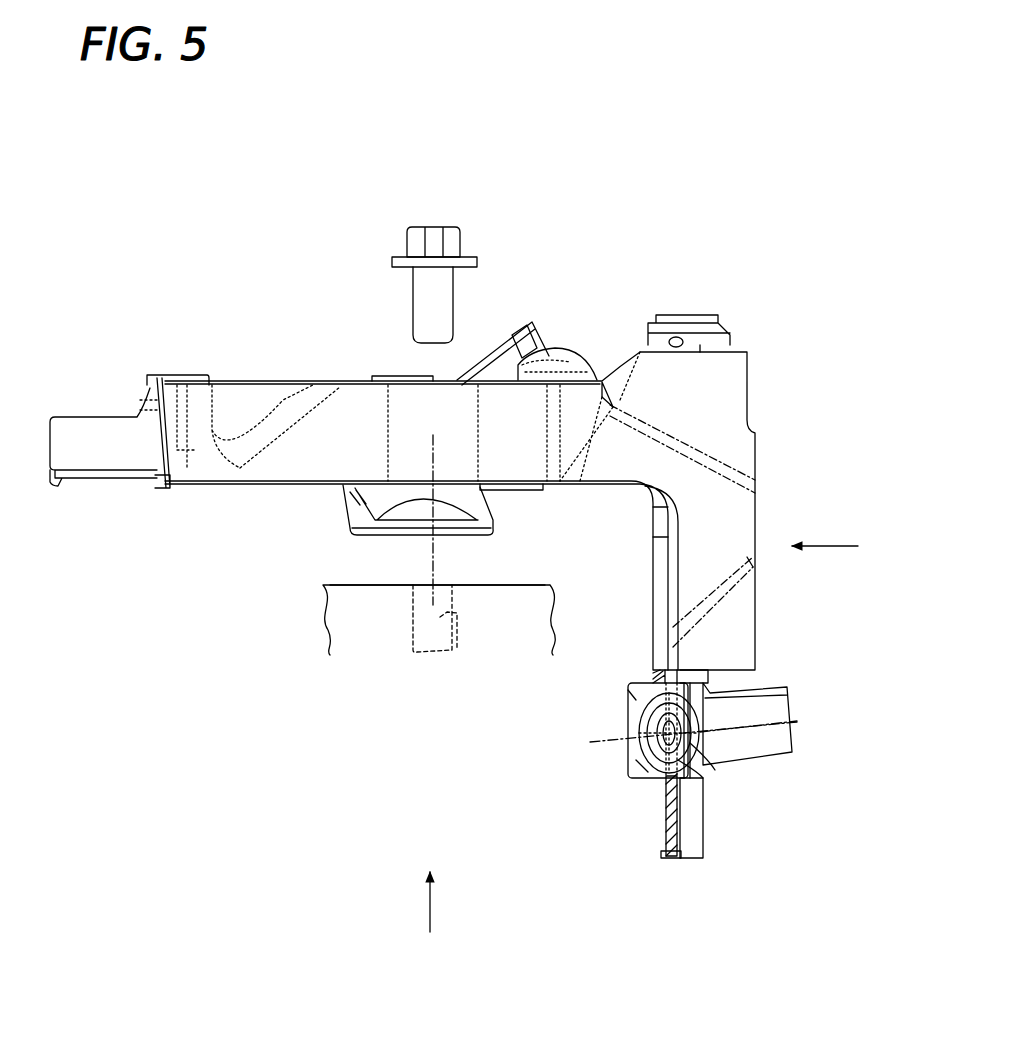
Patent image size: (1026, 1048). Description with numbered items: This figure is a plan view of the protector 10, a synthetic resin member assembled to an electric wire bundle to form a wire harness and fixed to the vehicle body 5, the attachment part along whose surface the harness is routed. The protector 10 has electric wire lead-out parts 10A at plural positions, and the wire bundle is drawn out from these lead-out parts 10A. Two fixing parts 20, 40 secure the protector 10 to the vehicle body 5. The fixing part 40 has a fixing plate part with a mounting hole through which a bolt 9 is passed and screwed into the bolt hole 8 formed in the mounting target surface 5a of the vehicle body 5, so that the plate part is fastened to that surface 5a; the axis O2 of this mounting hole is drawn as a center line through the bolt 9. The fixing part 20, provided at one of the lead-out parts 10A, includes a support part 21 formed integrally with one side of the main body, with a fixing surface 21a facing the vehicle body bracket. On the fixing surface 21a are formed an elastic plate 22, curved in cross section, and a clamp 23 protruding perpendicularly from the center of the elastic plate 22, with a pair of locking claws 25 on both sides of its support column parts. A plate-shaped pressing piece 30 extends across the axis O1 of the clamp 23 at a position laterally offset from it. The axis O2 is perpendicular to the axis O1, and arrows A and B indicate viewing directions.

The vehicle body 5 is at (322, 628).
The mounting target surface 5a is at (517, 585).
The bolt hole 8 is at (440, 617).
The bolt 9 is at (413, 238).
The protector 10 is at (314, 344).
The electric wire lead-out part 10A is at (150, 408).
The fixing part 20 is at (632, 785).
The support part 21 is at (638, 684).
The fixing surface 21a is at (628, 692).
The elastic plate 22 is at (660, 778).
The clamp 23 is at (700, 762).
The locking claws 25 is at (702, 778).
The pressing piece 30 is at (777, 752).
The fixing part 40 is at (345, 528).
The axis of the clamp O1 is at (646, 757).
The axis of the mounting hole O2 is at (432, 562).
The viewing direction A is at (428, 918).
The viewing direction B is at (836, 549).